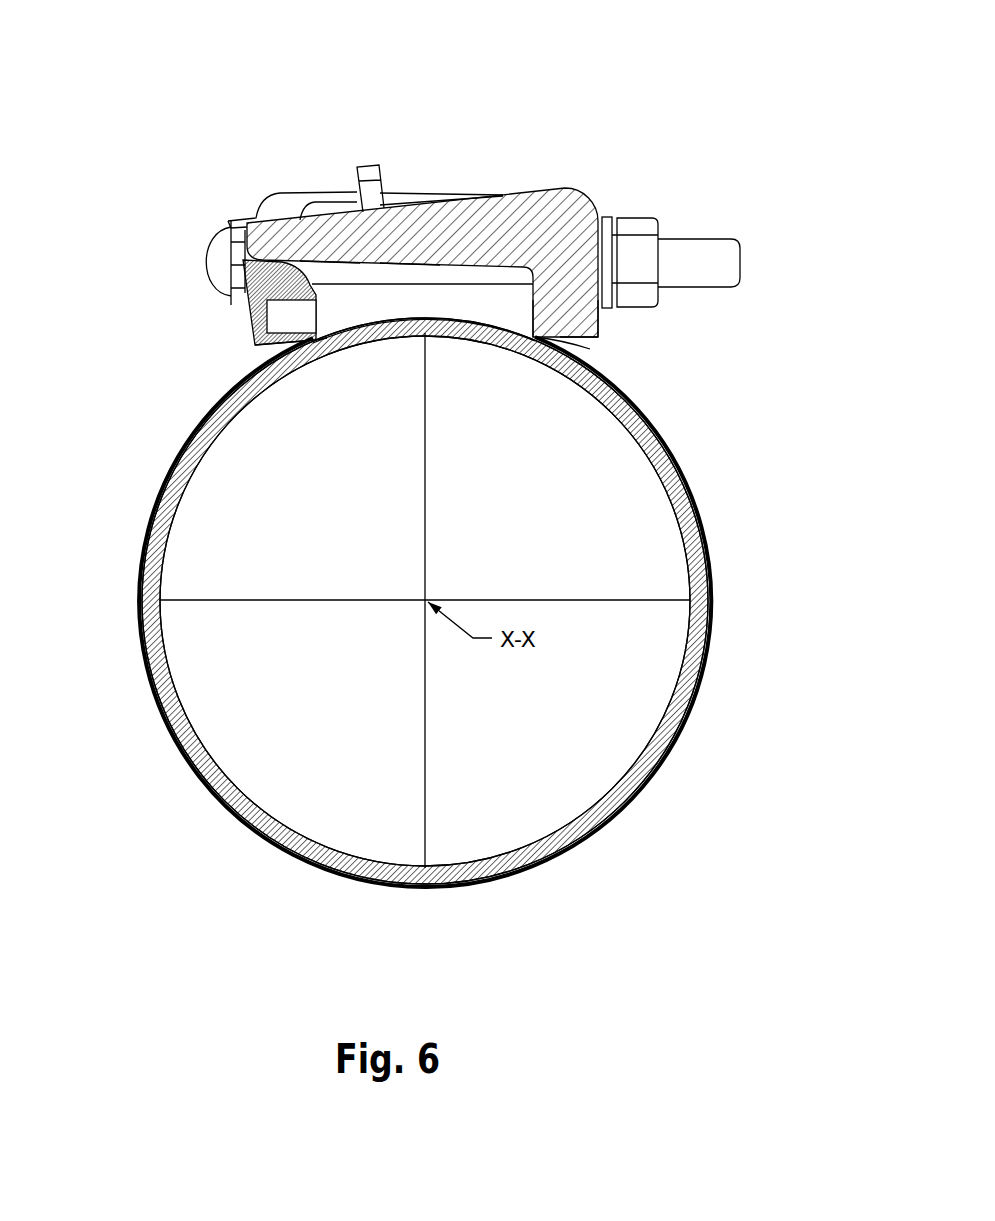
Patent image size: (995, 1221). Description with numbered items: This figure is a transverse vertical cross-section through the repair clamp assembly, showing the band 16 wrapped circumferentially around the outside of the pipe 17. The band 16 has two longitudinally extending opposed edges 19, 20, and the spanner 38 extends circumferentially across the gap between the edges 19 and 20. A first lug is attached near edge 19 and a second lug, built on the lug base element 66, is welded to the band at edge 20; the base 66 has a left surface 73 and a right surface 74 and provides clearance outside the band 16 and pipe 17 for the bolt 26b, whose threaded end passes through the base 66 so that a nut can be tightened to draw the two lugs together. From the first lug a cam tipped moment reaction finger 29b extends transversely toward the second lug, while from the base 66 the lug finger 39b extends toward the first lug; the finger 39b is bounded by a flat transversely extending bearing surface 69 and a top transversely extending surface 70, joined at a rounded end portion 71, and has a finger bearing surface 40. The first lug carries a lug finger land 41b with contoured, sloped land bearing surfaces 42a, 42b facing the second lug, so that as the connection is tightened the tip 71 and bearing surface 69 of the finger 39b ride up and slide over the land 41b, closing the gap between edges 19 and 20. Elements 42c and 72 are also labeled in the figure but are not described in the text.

The band 16 is at (664, 763).
The pipe 17 is at (355, 855).
The edge of band 19 is at (320, 340).
The edge of band 20 is at (532, 342).
The bolt 26b is at (714, 239).
The finger 29b is at (337, 189).
The spanner 38 is at (493, 326).
The lug finger 39b is at (495, 224).
The finger bearing surface 40 is at (327, 264).
The lug finger land 41b is at (243, 312).
The land bearing surface 42a is at (297, 288).
The land bearing surface 42b is at (273, 277).
The band end hook outer wall 42c is at (242, 257).
The lug base element 66 is at (599, 339).
The bearing surface 69 is at (410, 266).
The top surface 70 is at (471, 197).
The rounded end portion 71 is at (234, 229).
The block corner 72 is at (589, 343).
The left surface 73 is at (529, 302).
The right surface 74 is at (600, 325).